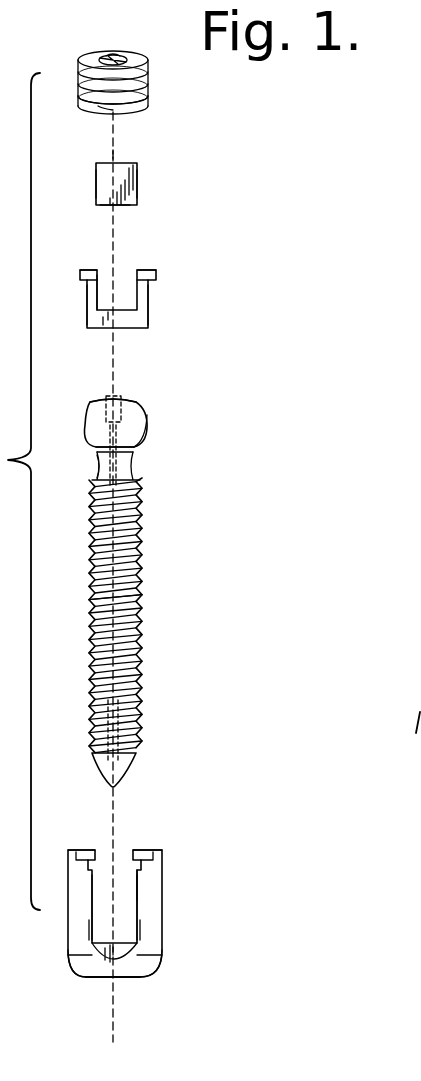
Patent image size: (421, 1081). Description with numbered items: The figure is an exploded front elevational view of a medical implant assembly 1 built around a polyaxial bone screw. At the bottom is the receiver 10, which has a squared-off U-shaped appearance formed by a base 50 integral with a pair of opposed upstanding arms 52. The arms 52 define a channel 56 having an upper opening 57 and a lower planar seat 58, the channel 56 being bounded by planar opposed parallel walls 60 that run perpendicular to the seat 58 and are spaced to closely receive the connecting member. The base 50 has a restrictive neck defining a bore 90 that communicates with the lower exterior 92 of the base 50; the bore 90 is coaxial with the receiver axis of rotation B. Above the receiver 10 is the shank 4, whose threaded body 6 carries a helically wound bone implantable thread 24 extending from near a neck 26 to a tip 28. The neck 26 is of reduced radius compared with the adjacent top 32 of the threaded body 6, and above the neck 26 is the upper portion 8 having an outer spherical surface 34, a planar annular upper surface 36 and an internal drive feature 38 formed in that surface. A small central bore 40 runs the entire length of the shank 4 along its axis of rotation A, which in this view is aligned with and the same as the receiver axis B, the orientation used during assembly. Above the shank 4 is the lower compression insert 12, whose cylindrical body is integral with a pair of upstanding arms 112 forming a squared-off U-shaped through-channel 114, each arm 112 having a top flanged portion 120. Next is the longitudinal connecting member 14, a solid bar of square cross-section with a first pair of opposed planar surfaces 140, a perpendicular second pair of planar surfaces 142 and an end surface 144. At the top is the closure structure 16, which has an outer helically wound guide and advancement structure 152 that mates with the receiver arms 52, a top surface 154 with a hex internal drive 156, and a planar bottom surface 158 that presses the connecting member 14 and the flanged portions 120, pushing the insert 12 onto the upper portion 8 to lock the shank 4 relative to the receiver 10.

The medical implant assembly 1 is at (241, 192).
The shank 4 is at (133, 470).
The threaded body 6 is at (142, 543).
The upper portion 8 is at (147, 408).
The receiver 10 is at (162, 888).
The lower compression insert 12 is at (148, 316).
The longitudinal connecting member 14 is at (137, 167).
The closure structure 16 is at (148, 72).
The bone implantable thread 24 is at (142, 605).
The neck 26 is at (133, 450).
The tip 28 is at (115, 786).
The top of threaded body 32 is at (97, 470).
The outer spherical surface 34 is at (140, 421).
The planar annular upper surface 36 is at (140, 400).
The internal drive feature 38 is at (120, 398).
The central bore 40 is at (118, 664).
The base 50 is at (162, 958).
The upstanding arms 52 is at (162, 866).
The channel 56 is at (136, 900).
The upper opening 57 is at (106, 837).
The lower planar seat 58 is at (140, 945).
The planar opposed parallel walls 60 is at (140, 932).
The bore 90 is at (97, 990).
The lower exterior 92 is at (140, 978).
The upstanding arms 112 is at (87, 302).
The through-channel 114 is at (110, 280).
The top flanged portion 120 is at (90, 270).
The first pair of opposed planar surfaces 140 is at (117, 160).
The second pair of opposed planar surfaces 142 is at (96, 180).
The first end surface 144 is at (105, 205).
The guide and advancement structure 152 is at (148, 95).
The top surface 154 is at (90, 55).
The internal drive 156 is at (113, 55).
The bottom surface 158 is at (104, 116).
The axis of rotation A is at (115, 822).
The axis of rotation B is at (115, 1025).